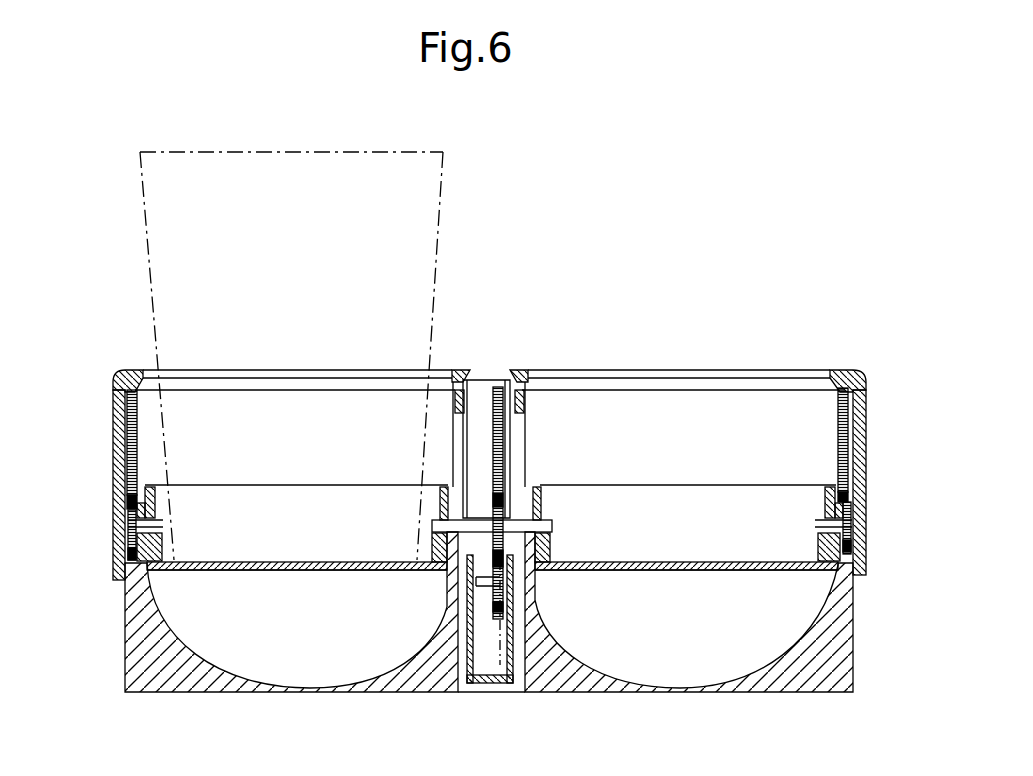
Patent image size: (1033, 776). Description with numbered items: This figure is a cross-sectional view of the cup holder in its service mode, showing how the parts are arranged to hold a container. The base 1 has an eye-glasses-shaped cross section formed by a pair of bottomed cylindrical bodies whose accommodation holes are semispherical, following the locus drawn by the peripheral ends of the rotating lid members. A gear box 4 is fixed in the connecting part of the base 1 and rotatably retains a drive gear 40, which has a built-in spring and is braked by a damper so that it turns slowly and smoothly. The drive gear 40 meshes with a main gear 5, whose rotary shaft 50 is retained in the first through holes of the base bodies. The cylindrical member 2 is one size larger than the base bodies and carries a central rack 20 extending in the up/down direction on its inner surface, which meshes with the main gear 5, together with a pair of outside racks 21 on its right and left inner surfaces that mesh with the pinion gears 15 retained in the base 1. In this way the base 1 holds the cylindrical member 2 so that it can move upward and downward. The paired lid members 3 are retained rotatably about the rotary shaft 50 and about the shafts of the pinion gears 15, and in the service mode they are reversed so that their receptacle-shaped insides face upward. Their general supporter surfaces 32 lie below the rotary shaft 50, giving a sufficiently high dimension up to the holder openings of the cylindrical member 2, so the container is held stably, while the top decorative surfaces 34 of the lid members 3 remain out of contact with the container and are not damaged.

The base 1 is at (153, 670).
The cylindrical member 2 is at (130, 378).
The lid member 3 is at (178, 560).
The gear box 4 is at (518, 650).
The main gear 5 is at (505, 533).
The pinion gear 15 is at (132, 540).
The central rack 20 is at (500, 425).
The outside rack 21 is at (132, 412).
The general supporter surface 32 is at (266, 562).
The decorative surface 34 is at (262, 572).
The drive gear 40 is at (510, 577).
The rotary shaft 50 is at (530, 524).